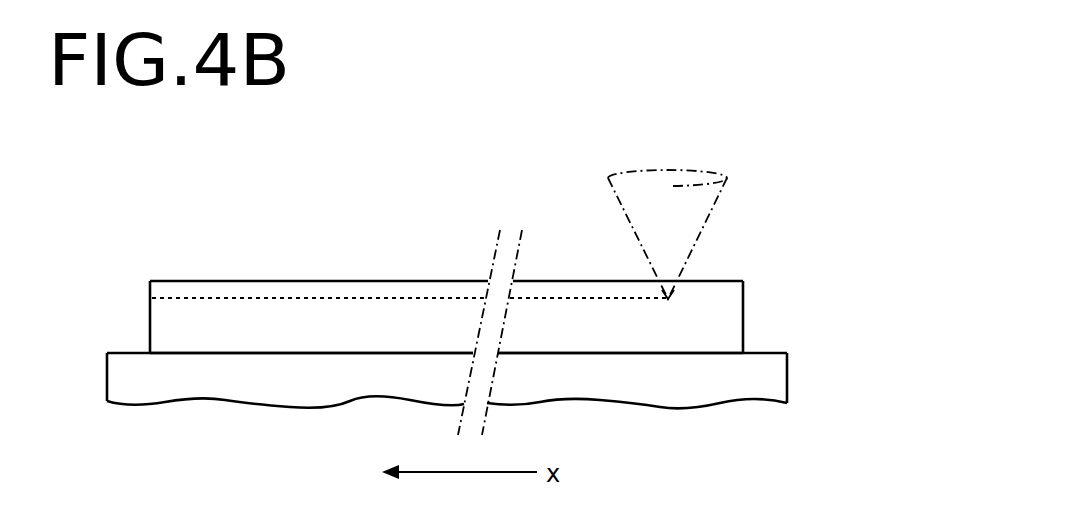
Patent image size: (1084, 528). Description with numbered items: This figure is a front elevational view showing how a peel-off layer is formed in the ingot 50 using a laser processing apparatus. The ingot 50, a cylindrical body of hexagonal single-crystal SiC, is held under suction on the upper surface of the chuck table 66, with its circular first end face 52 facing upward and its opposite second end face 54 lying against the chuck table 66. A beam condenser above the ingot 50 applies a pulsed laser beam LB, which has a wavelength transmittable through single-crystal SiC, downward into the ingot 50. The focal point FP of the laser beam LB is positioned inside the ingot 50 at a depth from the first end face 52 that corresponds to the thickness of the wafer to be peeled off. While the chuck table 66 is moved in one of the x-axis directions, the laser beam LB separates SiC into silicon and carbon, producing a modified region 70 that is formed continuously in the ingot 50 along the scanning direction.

The ingot 50 is at (748, 329).
The first end face 52 is at (273, 280).
The second end face 54 is at (206, 353).
The modified region 70 is at (370, 297).
The chuck table 66 is at (772, 380).
The pulsed laser beam LB is at (622, 212).
The focal point FP is at (670, 299).